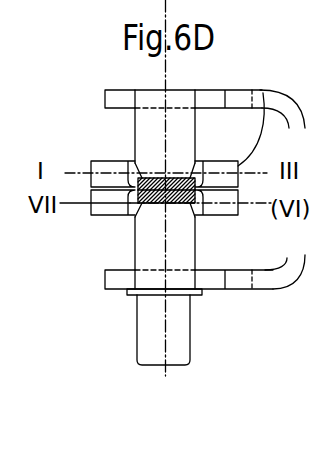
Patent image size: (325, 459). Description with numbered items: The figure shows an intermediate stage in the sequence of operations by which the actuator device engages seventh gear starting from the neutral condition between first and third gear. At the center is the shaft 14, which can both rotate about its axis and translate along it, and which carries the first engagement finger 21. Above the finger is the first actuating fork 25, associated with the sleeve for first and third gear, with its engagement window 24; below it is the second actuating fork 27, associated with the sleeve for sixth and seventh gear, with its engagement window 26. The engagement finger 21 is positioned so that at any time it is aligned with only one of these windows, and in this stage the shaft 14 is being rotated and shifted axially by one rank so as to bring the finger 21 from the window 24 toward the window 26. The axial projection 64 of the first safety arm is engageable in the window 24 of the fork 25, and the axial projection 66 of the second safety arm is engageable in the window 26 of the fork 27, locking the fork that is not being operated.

The shaft 14 is at (188, 345).
The first engagement finger 21 is at (185, 168).
The engagement window 24 is at (135, 170).
The first actuating fork 25 is at (262, 92).
The engagement window 26 is at (140, 217).
The second actuating fork 27 is at (242, 213).
The axial projection 64 is at (138, 123).
The axial projection 66 is at (187, 250).